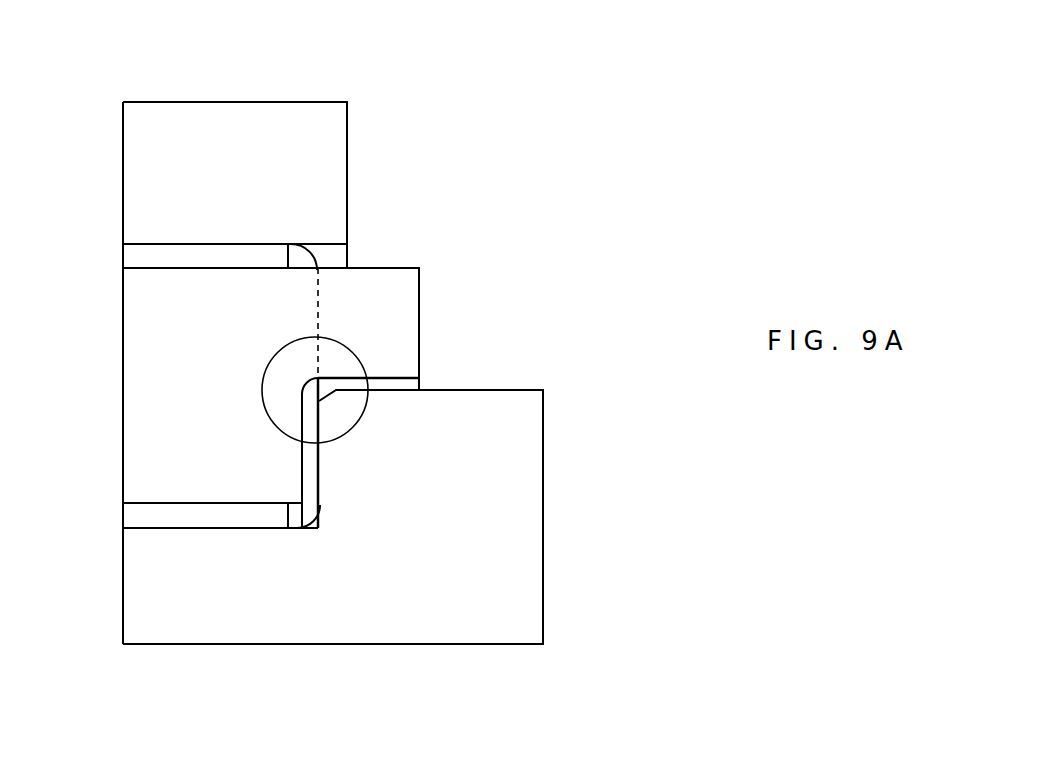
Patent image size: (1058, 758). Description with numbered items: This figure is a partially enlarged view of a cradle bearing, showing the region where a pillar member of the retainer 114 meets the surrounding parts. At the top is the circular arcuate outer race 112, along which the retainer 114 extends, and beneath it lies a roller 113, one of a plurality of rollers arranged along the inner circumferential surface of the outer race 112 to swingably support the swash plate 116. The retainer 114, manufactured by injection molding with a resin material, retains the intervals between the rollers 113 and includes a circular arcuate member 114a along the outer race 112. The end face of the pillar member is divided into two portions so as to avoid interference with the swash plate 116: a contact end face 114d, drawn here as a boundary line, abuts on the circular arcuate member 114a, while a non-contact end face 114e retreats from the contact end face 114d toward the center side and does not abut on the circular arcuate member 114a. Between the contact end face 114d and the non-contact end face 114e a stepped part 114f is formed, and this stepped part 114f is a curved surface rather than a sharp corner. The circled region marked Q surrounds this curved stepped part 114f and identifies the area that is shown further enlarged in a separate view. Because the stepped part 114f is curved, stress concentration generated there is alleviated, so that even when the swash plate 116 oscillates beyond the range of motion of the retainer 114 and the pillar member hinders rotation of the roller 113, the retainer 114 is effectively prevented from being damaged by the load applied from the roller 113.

The outer race 112 is at (242, 163).
The roller 113 is at (170, 257).
The retainer 114 is at (106, 467).
The circular arcuate member 114a is at (382, 335).
The contact end face 114d is at (318, 293).
The non-contact end face 114e is at (302, 478).
The stepped part 114f is at (307, 383).
The swash plate 116 is at (502, 533).
The part Q is at (262, 392).